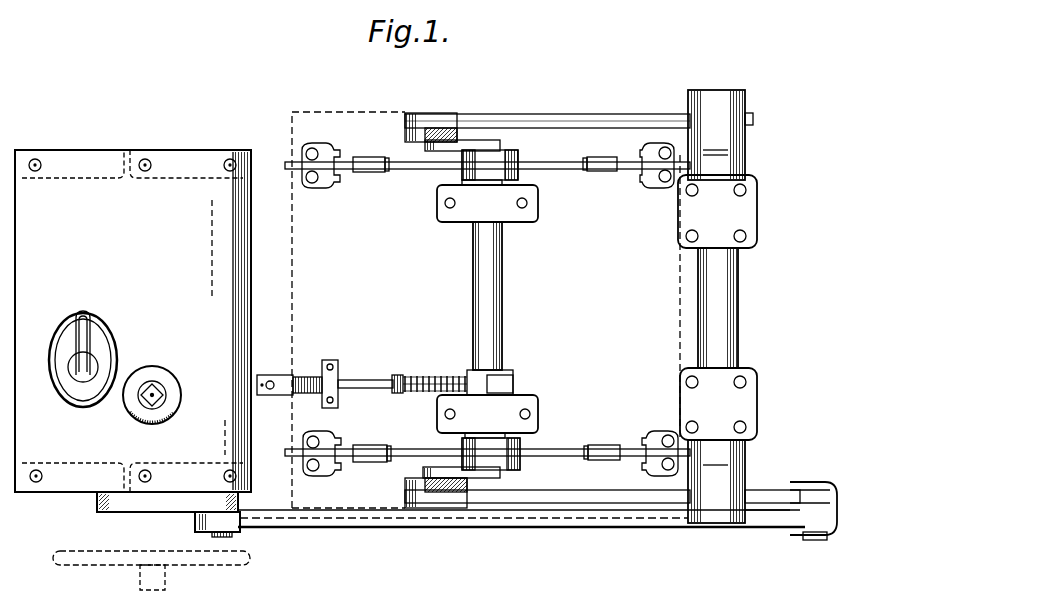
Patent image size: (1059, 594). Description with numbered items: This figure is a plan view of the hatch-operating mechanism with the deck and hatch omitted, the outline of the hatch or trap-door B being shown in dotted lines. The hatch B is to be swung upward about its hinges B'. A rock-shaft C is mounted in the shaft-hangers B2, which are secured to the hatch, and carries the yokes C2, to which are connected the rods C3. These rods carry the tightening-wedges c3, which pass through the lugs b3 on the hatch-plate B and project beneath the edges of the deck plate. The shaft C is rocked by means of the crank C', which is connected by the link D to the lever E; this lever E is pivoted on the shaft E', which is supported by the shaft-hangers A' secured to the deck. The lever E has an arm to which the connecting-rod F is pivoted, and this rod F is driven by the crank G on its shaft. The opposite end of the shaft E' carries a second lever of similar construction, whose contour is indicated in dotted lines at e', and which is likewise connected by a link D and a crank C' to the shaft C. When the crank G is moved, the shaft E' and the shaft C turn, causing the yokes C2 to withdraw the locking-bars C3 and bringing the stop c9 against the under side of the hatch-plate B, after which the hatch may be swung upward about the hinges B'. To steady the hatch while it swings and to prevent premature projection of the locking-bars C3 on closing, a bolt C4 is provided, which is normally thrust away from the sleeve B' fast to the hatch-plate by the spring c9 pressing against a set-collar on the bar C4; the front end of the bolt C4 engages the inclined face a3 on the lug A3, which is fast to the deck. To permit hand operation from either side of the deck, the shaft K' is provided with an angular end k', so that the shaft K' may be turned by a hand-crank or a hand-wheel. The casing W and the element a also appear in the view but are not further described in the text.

The casing W is at (133, 321).
The lever a is at (90, 348).
The angular end k' is at (160, 386).
The crank G is at (166, 503).
The shaft K' is at (134, 579).
The connecting-rod F is at (632, 522).
The hatch B is at (486, 310).
The link D is at (423, 132).
The crank C' is at (467, 318).
The yoke C2 is at (500, 163).
The rod C3 is at (405, 166).
The tightening-wedge c3 is at (350, 160).
The lug b3 is at (323, 148).
The shaft-hanger B2 is at (463, 212).
The rock-shaft C is at (475, 308).
The lug A3 is at (284, 376).
The inclined face a3 is at (312, 377).
The bolt C4 is at (372, 380).
The spring c9 is at (420, 378).
The shaft E' is at (731, 306).
The shaft-hanger A' is at (737, 301).
The lever contour e' is at (791, 334).
The lever E is at (602, 525).
The hinges B' is at (741, 552).